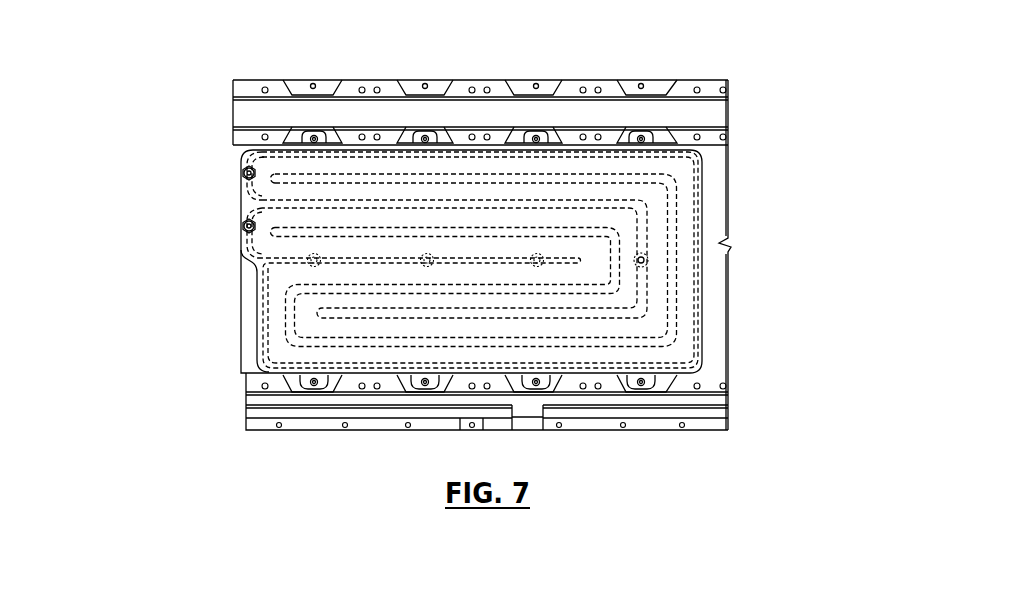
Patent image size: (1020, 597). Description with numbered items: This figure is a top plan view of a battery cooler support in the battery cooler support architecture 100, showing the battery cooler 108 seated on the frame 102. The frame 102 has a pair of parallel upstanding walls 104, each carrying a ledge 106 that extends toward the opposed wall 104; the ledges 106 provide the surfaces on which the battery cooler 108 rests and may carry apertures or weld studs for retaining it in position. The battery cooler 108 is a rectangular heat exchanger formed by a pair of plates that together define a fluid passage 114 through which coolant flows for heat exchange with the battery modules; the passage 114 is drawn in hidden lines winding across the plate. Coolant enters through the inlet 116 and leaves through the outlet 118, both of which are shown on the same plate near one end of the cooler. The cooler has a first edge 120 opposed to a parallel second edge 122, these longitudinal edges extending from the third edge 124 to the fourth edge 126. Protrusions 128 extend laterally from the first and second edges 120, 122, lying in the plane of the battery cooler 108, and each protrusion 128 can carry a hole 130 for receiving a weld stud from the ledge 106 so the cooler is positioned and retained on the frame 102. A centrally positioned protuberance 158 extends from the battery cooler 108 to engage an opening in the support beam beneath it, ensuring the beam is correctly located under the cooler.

The battery cooler support architecture 100 is at (835, 95).
The frame 102 is at (345, 112).
The upstanding wall 104 is at (273, 125).
The ledge 106 is at (243, 137).
The battery cooler 108 is at (640, 328).
The fluid passage 114 is at (275, 333).
The inlet 116 is at (247, 175).
The outlet 118 is at (247, 228).
The first edge 120 is at (378, 375).
The second edge 122 is at (588, 152).
The third edge 124 is at (703, 208).
The fourth edge 126 is at (262, 290).
The protrusion 128 is at (545, 380).
The hole 130 is at (315, 383).
The protuberance 158 is at (644, 260).